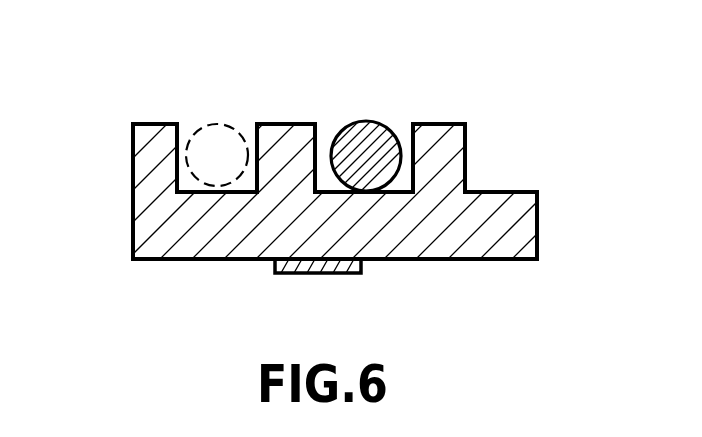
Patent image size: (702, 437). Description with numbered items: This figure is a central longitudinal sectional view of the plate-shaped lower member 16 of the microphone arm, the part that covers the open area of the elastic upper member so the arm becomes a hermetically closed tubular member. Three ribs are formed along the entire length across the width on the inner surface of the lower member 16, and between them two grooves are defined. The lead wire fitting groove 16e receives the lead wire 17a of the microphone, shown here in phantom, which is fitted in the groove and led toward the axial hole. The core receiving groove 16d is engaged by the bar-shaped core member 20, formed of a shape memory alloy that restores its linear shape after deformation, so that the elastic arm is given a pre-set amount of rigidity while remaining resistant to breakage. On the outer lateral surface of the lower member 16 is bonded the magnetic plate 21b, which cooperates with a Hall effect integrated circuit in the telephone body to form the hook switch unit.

The lower member 16 is at (522, 212).
The lead wire fitting groove 16e is at (186, 118).
The core receiving groove 16d is at (402, 129).
The lead wire 17a is at (219, 128).
The core member 20 is at (367, 128).
The magnetic plate 21b is at (350, 274).